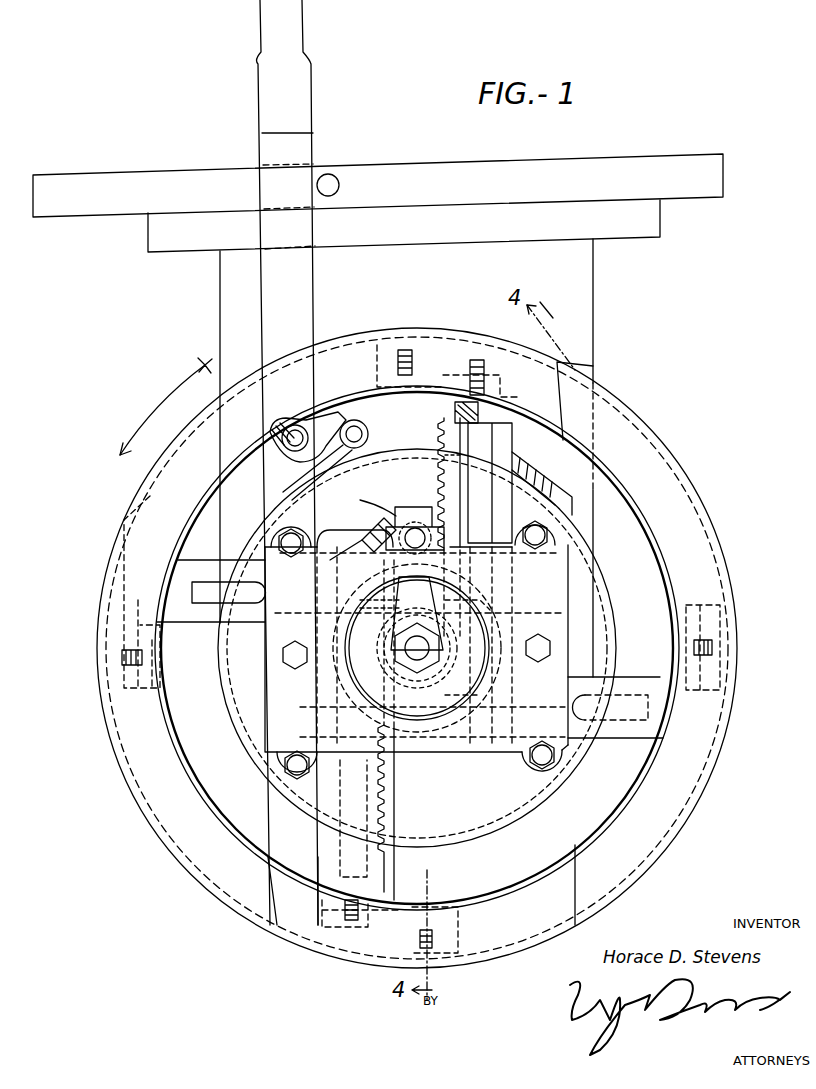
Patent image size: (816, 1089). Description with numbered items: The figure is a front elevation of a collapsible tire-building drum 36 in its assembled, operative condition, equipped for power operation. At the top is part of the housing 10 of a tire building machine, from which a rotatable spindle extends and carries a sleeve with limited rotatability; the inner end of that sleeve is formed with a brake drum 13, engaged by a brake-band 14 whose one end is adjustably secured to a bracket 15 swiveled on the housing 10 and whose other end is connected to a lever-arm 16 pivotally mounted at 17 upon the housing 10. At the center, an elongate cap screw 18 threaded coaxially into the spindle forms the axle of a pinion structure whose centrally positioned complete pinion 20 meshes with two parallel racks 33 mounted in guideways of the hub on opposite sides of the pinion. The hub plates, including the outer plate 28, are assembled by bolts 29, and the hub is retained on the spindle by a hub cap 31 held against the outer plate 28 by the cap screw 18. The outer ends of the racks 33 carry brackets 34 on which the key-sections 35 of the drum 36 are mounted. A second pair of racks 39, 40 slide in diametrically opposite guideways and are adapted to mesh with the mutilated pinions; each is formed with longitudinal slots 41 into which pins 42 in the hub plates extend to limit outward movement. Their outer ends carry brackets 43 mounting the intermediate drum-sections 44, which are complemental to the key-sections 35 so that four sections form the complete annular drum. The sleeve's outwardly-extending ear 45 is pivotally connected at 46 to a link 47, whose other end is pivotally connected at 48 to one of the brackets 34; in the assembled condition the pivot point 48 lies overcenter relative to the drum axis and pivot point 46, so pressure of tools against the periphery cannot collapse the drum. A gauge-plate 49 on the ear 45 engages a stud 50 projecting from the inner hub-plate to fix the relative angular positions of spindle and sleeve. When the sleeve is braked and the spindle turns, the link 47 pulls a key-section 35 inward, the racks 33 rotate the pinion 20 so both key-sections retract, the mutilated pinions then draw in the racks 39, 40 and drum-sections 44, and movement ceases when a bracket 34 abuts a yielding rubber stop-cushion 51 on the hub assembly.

The housing 10 is at (580, 290).
The brake drum 13 is at (397, 450).
The brake-band 14 is at (318, 468).
The bracket 15 is at (508, 433).
The lever-arm 16 is at (264, 296).
The pivot 17 is at (292, 442).
The cap screw 18 is at (417, 660).
The complete pinion 20 is at (417, 613).
The outer plate 28 is at (432, 748).
The bolts 29 is at (280, 543).
The hub cap 31 is at (478, 629).
The racks 33 is at (442, 477).
The brackets 34 is at (383, 387).
The key-sections 35 is at (548, 386).
The collapsible tire-building drum 36 is at (96, 641).
The rack 39 is at (621, 689).
The rack 40 is at (208, 614).
The longitudinal slots 41 is at (250, 592).
The pins 42 is at (323, 600).
The brackets 43 is at (144, 682).
The intermediate drum-sections 44 is at (129, 788).
The ear 45 is at (410, 507).
The pivot point 46 is at (415, 543).
The link 47 is at (444, 460).
The pivot point 48 is at (521, 417).
The gauge-plate 49 is at (370, 545).
The stud 50 is at (345, 548).
The stop-cushion 51 is at (370, 497).